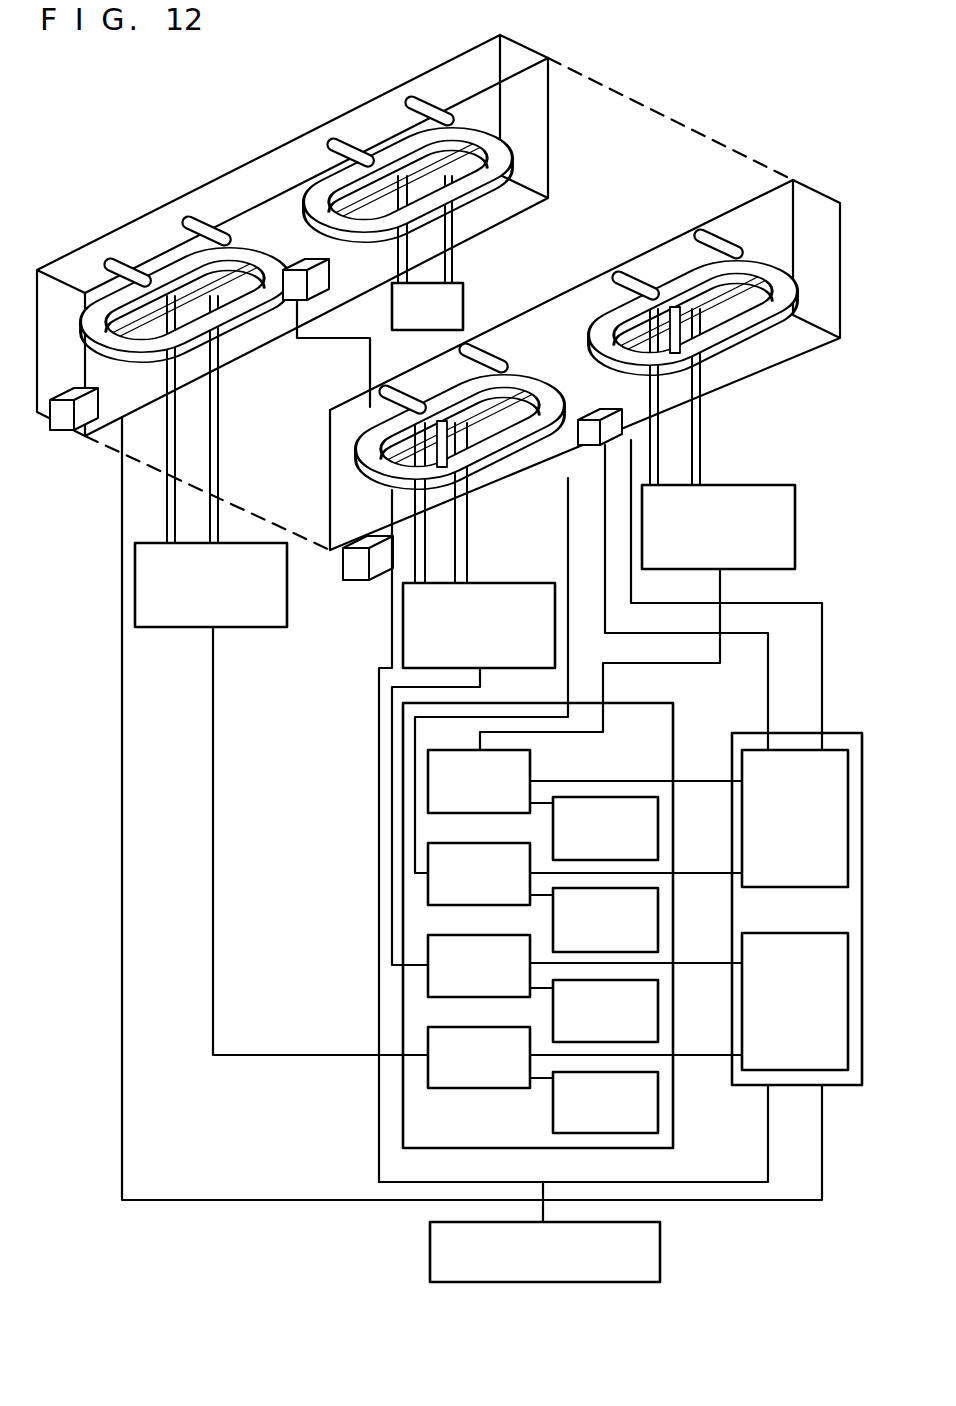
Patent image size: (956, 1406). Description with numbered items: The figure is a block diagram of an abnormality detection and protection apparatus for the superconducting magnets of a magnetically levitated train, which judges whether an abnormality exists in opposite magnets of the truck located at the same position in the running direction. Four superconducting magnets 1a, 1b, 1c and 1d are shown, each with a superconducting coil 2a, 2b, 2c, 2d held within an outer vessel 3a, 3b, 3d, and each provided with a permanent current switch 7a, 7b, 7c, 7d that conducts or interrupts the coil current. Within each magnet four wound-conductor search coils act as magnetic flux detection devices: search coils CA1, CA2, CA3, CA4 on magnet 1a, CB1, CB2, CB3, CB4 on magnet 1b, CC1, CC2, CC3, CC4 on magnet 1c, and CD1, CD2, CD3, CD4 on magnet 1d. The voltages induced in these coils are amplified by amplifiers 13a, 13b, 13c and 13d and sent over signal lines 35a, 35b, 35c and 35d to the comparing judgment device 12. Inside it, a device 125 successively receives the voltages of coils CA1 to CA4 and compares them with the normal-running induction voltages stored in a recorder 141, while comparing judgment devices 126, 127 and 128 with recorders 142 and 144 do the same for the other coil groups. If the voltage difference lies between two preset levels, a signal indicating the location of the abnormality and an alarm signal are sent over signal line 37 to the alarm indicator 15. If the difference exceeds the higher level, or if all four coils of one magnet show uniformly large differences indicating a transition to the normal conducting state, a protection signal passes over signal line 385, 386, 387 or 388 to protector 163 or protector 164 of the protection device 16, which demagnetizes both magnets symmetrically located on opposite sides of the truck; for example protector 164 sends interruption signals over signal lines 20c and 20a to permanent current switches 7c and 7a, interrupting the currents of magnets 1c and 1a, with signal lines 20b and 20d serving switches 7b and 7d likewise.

The superconducting magnet 1a is at (180, 353).
The superconducting magnet 1b is at (423, 202).
The superconducting magnet 1c is at (434, 441).
The superconducting magnet 1d is at (667, 320).
The superconducting coil 2a is at (74, 290).
The superconducting coil 2b is at (302, 176).
The superconducting coil 2c is at (333, 454).
The superconducting coil 2d is at (656, 269).
The outer vessel 3a is at (186, 192).
The outer vessel 3b is at (382, 110).
The outer vessel 3d is at (818, 180).
The permanent current switch 7a is at (66, 430).
The permanent current switch 7b is at (297, 318).
The permanent current switch 7c is at (352, 560).
The permanent current switch 7d is at (598, 454).
The comparing judgment device 12 is at (673, 1143).
The amplifier 13a is at (134, 542).
The amplifier 13b is at (458, 284).
The amplifier 13c is at (402, 634).
The amplifier 13d is at (744, 484).
The alarm indicator 15 is at (660, 1236).
The protection device 16 is at (797, 908).
The signal line 20a is at (122, 596).
The signal line 20b is at (370, 384).
The signal line 20c is at (380, 696).
The signal line 20d is at (632, 590).
The signal line 35a is at (208, 776).
The signal line 35b is at (568, 586).
The signal line 35c is at (382, 726).
The signal line 35d is at (606, 679).
The signal line 37 is at (546, 1166).
The device 125 is at (428, 1043).
The comparing judgment device 126 is at (428, 870).
The comparing judgment device 127 is at (428, 953).
The comparing judgment device 128 is at (428, 780).
The recorder 141 is at (654, 993).
The recorder 142 is at (654, 898).
The recorder 144 is at (625, 797).
The protector 163 is at (794, 748).
The protector 164 is at (796, 1072).
The signal line 385 is at (710, 1056).
The signal line 386 is at (702, 872).
The signal line 387 is at (702, 962).
The signal line 388 is at (702, 778).
The search coil CA1 is at (104, 262).
The search coil CA2 is at (208, 233).
The search coil CA3 is at (184, 394).
The search coil CA4 is at (228, 352).
The search coil CB1 is at (320, 154).
The search coil CB2 is at (473, 124).
The search coil CB3 is at (396, 306).
The search coil CB4 is at (511, 191).
The search coil CC1 is at (378, 412).
The search coil CC2 is at (484, 351).
The search coil CC3 is at (349, 482).
The search coil CC4 is at (512, 474).
The search coil CD1 is at (686, 244).
The search coil CD2 is at (736, 219).
The search coil CD3 is at (590, 354).
The search coil CD4 is at (754, 362).